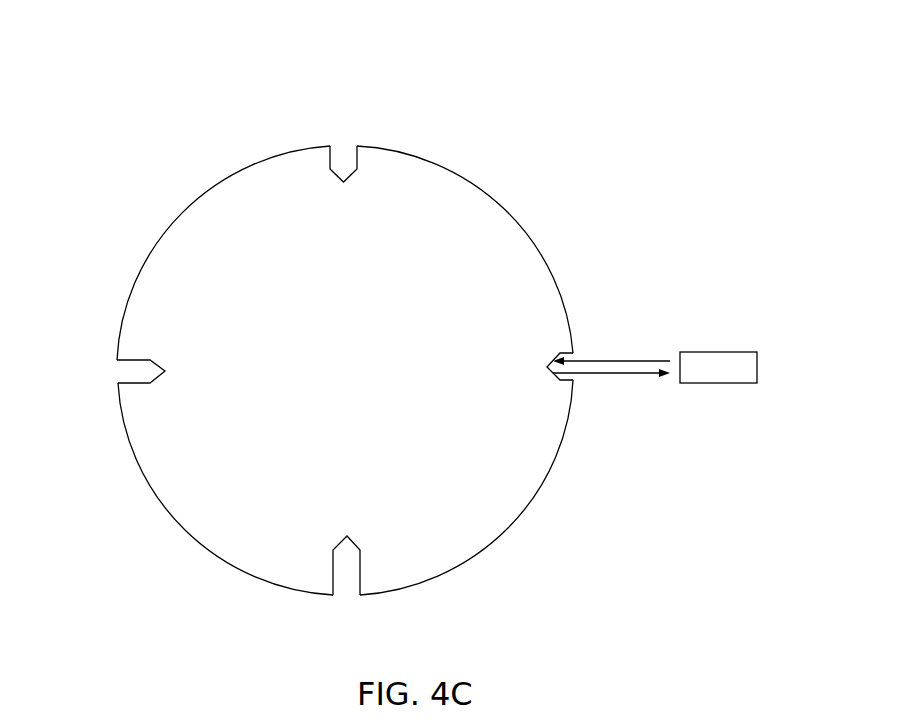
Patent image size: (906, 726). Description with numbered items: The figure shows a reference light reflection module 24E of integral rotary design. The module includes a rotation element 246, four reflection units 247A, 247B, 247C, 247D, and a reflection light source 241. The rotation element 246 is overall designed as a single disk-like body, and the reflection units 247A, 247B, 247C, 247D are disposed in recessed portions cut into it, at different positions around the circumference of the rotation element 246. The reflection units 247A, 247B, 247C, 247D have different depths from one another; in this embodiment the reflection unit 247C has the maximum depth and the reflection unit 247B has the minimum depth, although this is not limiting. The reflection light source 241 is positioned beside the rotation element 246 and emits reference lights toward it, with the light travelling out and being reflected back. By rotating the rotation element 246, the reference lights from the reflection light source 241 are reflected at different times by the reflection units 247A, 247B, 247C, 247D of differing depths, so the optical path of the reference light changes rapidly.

The reference light reflection module 24E is at (90, 90).
The rotation element 246 is at (215, 183).
The reflection unit 247A is at (343, 153).
The reflection unit 247B is at (563, 358).
The reflection unit 247C is at (345, 580).
The reflection unit 247D is at (130, 369).
The reflection light source 241 is at (703, 352).